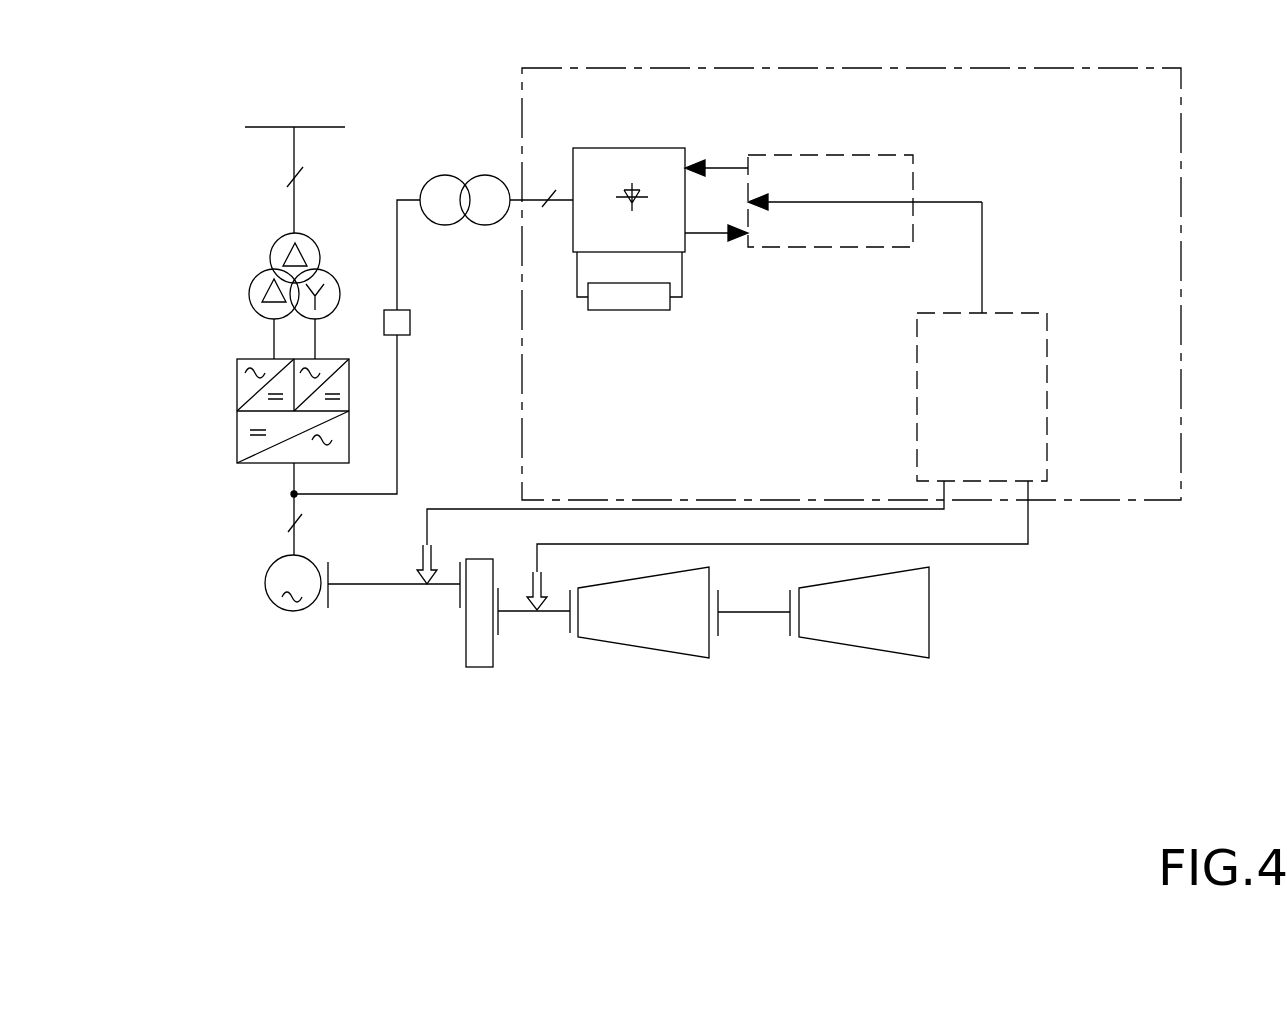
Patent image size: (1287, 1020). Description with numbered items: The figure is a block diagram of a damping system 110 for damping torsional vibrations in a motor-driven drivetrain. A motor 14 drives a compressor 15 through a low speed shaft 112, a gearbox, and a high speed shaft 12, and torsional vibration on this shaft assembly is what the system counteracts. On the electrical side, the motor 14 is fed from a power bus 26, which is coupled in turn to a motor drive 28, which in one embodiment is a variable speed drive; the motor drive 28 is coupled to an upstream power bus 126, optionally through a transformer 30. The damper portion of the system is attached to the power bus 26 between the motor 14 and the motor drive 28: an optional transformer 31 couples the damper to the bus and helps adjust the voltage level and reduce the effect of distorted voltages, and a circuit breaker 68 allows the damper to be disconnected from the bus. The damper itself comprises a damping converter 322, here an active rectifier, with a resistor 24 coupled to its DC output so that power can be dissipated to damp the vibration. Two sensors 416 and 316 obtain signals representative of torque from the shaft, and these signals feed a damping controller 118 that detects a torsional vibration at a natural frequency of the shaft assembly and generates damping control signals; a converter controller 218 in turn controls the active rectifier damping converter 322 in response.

The power bus 126 is at (266, 153).
The transformer 30 is at (240, 258).
The motor drive 28 is at (222, 408).
The power bus 26 is at (294, 475).
The circuit breaker 68 is at (410, 323).
The transformer 31 is at (460, 148).
The damping system 110 is at (822, 423).
The damping converter 322 is at (655, 148).
The resistor 24 is at (627, 312).
The controller 218 is at (913, 178).
The controller 118 is at (1015, 313).
The sensor 416 is at (420, 558).
The sensor 316 is at (537, 575).
The motor 14 is at (270, 603).
The low speed shaft 112 is at (378, 618).
The high speed shaft 12 is at (532, 645).
The compressor 15 is at (658, 627).